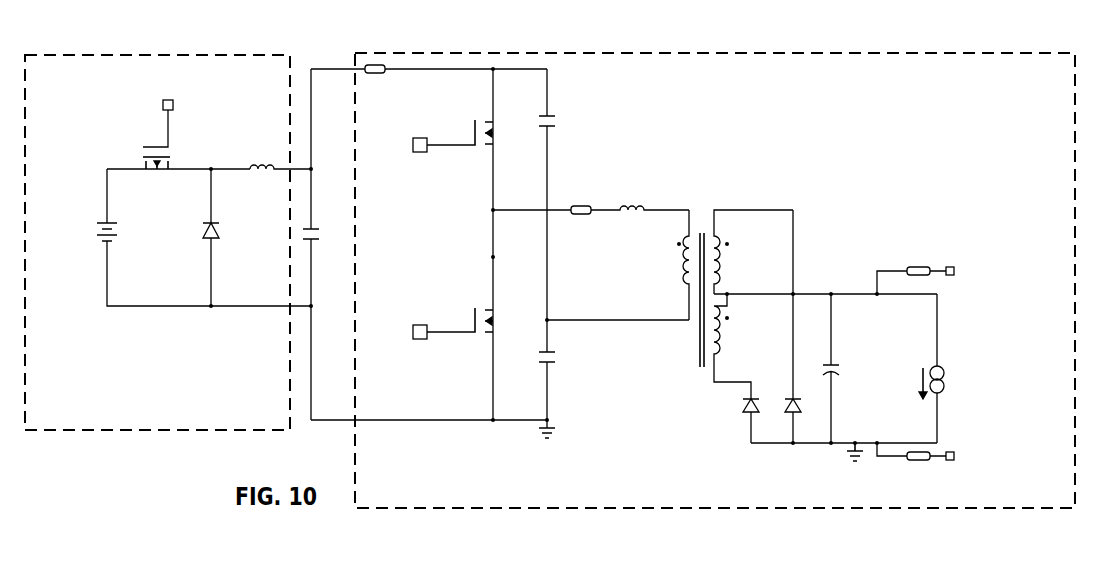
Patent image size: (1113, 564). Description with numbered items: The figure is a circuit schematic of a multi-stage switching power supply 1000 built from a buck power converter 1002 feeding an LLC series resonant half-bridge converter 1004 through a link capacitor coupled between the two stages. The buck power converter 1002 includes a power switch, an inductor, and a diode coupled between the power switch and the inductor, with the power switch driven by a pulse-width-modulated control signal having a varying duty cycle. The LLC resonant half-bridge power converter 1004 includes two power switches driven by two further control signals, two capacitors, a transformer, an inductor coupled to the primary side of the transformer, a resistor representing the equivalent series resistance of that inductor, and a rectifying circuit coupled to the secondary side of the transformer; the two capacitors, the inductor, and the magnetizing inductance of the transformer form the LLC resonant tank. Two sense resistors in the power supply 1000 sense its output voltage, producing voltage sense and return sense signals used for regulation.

The multi-stage switching power supply 1000 is at (704, 34).
The buck power converter 1002 is at (225, 55).
The LLC series resonant half-bridge converter 1004 is at (840, 53).